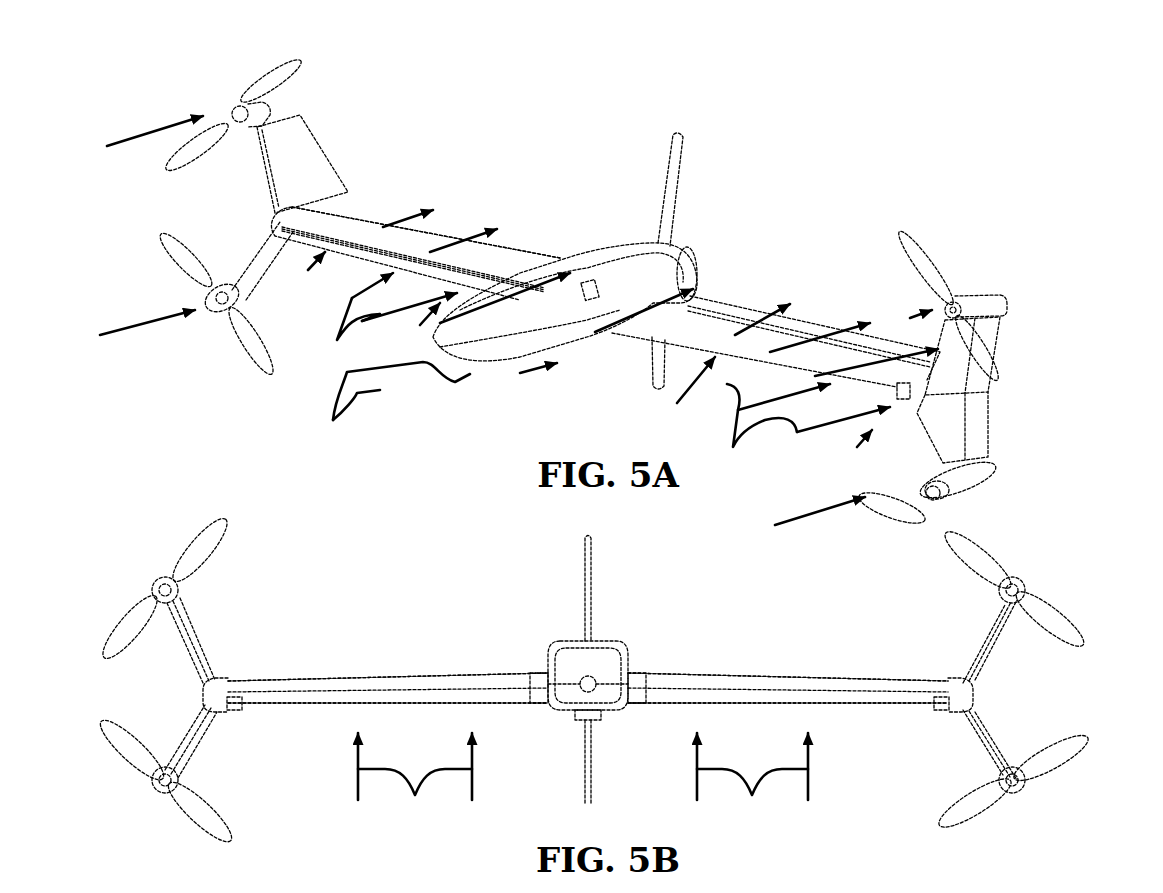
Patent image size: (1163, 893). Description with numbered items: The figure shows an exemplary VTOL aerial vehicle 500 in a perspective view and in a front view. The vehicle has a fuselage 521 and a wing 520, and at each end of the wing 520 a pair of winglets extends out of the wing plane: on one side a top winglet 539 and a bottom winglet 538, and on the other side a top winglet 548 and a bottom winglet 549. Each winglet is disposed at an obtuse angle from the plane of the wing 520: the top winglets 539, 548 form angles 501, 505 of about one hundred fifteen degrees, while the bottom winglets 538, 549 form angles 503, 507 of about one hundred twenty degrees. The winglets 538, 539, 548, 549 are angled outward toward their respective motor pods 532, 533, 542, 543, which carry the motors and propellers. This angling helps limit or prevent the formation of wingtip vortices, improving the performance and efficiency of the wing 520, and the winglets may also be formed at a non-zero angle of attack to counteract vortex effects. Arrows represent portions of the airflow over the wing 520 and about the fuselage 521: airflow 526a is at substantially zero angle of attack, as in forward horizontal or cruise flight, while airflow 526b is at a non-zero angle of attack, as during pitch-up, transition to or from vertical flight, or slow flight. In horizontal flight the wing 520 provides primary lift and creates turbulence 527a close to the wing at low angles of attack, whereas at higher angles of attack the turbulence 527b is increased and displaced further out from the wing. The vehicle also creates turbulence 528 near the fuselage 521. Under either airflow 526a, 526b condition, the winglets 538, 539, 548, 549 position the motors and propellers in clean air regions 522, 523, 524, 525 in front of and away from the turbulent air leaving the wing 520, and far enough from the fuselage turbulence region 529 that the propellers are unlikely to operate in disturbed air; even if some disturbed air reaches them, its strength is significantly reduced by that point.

In FIG. 5A, the VTOL aerial vehicle 500 is at (1040, 242).
In FIG. 5B, the VTOL aerial vehicle 500 is at (1080, 592).
In FIG. 5B, the obtuse angle of top winglet 501 is at (252, 680).
In FIG. 5B, the obtuse angle of bottom winglet 503 is at (210, 738).
In FIG. 5B, the obtuse angle of top winglet 505 is at (972, 648).
In FIG. 5B, the obtuse angle of bottom winglet 507 is at (968, 728).
In FIG. 5A, the wing 520 is at (435, 240).
In FIG. 5B, the wing 520 is at (398, 675).
In FIG. 5A, the fuselage 521 is at (685, 250).
In FIG. 5B, the fuselage 521 is at (595, 640).
In FIG. 5A, the clean air region 522 is at (910, 315).
In FIG. 5A, the clean air region 523 is at (823, 510).
In FIG. 5A, the clean air region 524 is at (152, 137).
In FIG. 5A, the clean air region 525 is at (155, 325).
In FIG. 5A, the airflow at substantially zero angle of attack 526a is at (598, 378).
In FIG. 5B, the airflow at substantially zero angle of attack 526a is at (583, 783).
In FIG. 5A, the airflow at non-zero angle of attack 526b is at (575, 367).
In FIG. 5A, the turbulence proximate the wing 527a is at (610, 289).
In FIG. 5B, the turbulence proximate the wing 527a is at (588, 673).
In FIG. 5A, the turbulence proximate the wing 527b is at (663, 243).
In FIG. 5B, the turbulence proximate the wing 527b is at (588, 633).
In FIG. 5A, the turbulence proximate the fuselage 528 is at (395, 406).
In FIG. 5A, the fuselage turbulence region 529 is at (591, 303).
In FIG. 5B, the fuselage turbulence region 529 is at (594, 680).
In FIG. 5A, the motor pod 532 is at (228, 283).
In FIG. 5B, the motor pod 532 is at (160, 790).
In FIG. 5A, the motor pod 533 is at (283, 104).
In FIG. 5B, the motor pod 533 is at (162, 578).
In FIG. 5A, the bottom winglet 538 is at (262, 272).
In FIG. 5B, the bottom winglet 538 is at (190, 743).
In FIG. 5A, the top winglet 539 is at (320, 152).
In FIG. 5B, the top winglet 539 is at (205, 649).
In FIG. 5A, the motor pod 542 is at (973, 305).
In FIG. 5B, the motor pod 542 is at (1032, 585).
In FIG. 5A, the motor pod 543 is at (983, 483).
In FIG. 5B, the motor pod 543 is at (1020, 790).
In FIG. 5A, the top winglet 548 is at (987, 330).
In FIG. 5B, the top winglet 548 is at (972, 642).
In FIG. 5A, the bottom winglet 549 is at (973, 440).
In FIG. 5B, the bottom winglet 549 is at (997, 748).